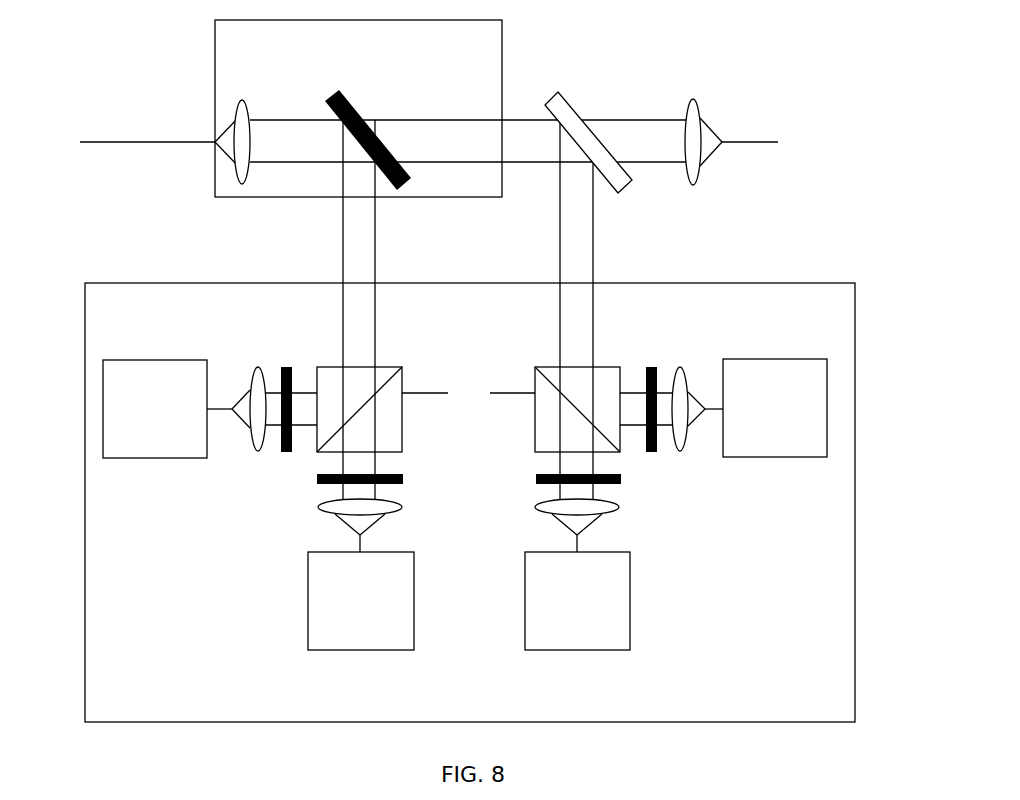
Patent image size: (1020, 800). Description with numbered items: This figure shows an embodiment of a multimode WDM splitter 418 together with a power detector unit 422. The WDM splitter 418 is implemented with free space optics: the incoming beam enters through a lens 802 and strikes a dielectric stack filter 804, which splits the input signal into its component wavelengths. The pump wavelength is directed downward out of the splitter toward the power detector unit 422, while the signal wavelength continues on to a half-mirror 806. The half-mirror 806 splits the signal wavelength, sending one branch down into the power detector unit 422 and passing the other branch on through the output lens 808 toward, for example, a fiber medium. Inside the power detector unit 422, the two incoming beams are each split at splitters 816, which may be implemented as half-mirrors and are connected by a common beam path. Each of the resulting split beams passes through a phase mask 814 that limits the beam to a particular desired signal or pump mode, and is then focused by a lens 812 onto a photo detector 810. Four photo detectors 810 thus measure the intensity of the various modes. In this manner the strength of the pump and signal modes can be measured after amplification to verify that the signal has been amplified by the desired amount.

The WDM splitter 418 is at (337, 79).
The lens 802 is at (242, 186).
The dielectric stack filter 804 is at (415, 178).
The half-mirror 806 is at (575, 106).
The output lens 808 is at (697, 97).
The photo detector 810 is at (796, 450).
The lens 812 is at (322, 512).
The phase mask 814 is at (317, 478).
The splitter 816 is at (468, 394).
The power detector unit 422 is at (452, 713).